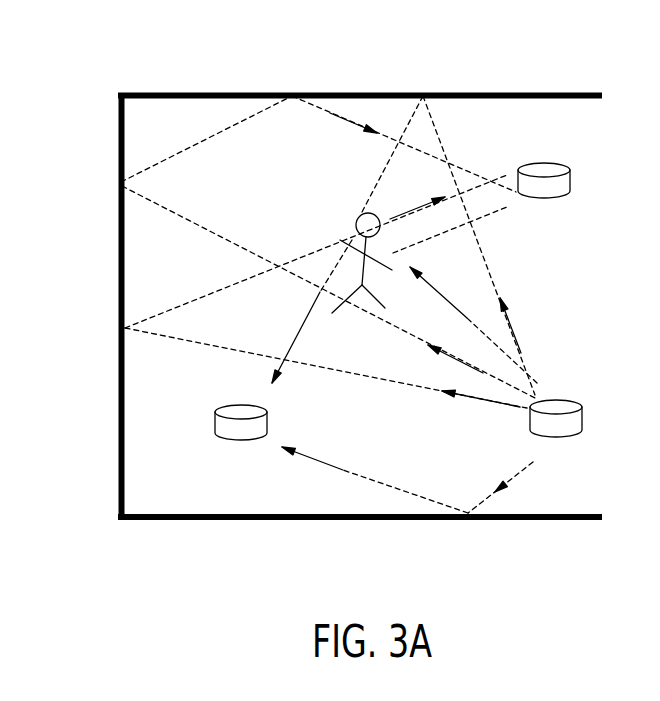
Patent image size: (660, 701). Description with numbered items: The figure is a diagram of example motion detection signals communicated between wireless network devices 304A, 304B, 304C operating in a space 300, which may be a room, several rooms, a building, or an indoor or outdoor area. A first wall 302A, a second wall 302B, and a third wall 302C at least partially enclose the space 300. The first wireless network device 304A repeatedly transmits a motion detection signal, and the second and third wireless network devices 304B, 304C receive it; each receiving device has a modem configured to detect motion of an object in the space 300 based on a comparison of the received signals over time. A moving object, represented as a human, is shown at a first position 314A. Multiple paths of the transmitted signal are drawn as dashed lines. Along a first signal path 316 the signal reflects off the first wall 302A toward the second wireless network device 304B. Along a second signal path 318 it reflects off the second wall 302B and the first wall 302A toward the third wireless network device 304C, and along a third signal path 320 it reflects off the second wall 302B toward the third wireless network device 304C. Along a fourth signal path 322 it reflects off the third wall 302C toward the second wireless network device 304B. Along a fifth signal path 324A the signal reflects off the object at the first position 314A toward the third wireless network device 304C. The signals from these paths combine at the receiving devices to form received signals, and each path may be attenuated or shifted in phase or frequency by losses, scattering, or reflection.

The space 300 is at (337, 310).
The first wall 302A is at (360, 93).
The second wall 302B is at (118, 148).
The third wall 302C is at (568, 522).
The first wireless network device 304A is at (548, 390).
The second wireless network device 304B is at (268, 416).
The third wireless network device 304C is at (573, 176).
The first position 314A is at (357, 213).
The first signal path 316 is at (520, 322).
The second signal path 318 is at (450, 357).
The third signal path 320 is at (468, 400).
The fourth signal path 322 is at (506, 484).
The fifth signal path 324A is at (433, 288).